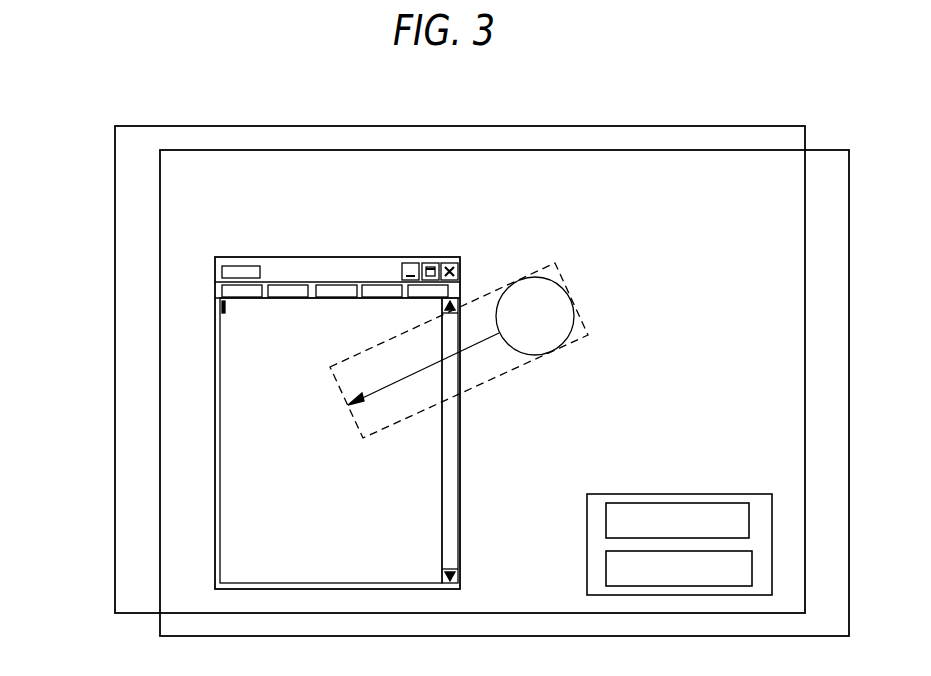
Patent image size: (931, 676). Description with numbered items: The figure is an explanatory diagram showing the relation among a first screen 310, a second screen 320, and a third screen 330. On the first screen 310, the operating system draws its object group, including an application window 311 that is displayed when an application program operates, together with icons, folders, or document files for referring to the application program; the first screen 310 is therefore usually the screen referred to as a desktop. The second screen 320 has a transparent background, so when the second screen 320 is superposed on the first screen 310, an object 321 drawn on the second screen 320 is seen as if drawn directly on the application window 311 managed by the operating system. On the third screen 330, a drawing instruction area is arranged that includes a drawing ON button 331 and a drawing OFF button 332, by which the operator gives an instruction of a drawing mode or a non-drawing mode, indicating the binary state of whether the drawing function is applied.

The first screen 310 is at (160, 230).
The second screen 320 is at (115, 378).
The application window 311 is at (333, 257).
The object 321 is at (528, 280).
The third screen 330 is at (678, 494).
The drawing ON button 331 is at (606, 521).
The drawing OFF button 332 is at (606, 568).